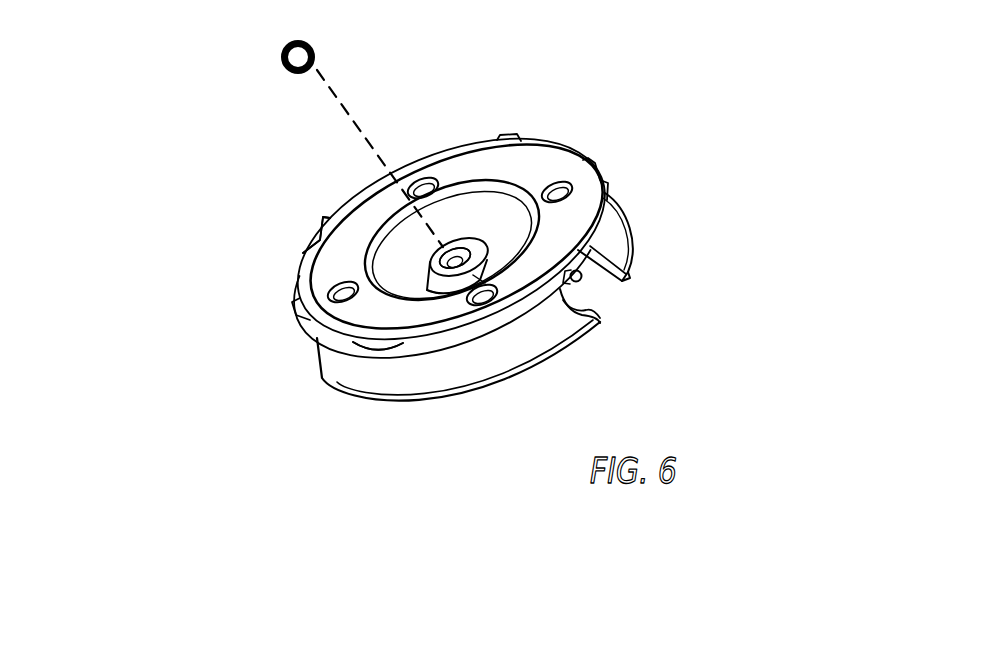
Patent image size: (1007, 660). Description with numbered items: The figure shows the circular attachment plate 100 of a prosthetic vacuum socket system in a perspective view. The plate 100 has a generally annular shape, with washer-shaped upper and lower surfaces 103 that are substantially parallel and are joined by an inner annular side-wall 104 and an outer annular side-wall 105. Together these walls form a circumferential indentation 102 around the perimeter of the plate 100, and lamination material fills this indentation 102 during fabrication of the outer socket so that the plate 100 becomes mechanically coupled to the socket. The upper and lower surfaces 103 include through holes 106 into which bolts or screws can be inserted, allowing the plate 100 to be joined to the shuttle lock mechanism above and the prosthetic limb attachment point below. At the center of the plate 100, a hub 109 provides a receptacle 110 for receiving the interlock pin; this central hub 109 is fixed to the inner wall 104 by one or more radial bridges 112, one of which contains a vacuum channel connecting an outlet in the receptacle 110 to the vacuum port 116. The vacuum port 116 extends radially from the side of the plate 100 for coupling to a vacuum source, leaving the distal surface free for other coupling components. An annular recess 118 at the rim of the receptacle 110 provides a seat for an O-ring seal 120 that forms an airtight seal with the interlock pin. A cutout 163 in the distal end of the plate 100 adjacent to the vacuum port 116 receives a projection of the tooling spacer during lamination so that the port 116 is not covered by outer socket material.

The attachment plate 100 is at (212, 207).
The circumferential indentation 102 is at (344, 357).
The upper and lower surfaces 103 is at (342, 258).
The inner annular side-wall 104 is at (460, 207).
The outer annular side-wall 105 is at (592, 260).
The holes 106 is at (557, 188).
The hub 109 is at (433, 297).
The receptacle 110 is at (447, 263).
The radial bridges 112 is at (497, 257).
The vacuum port 116 is at (584, 280).
The annular recess 118 is at (450, 252).
The O-ring seal 120 is at (313, 42).
The cutout 163 is at (583, 308).